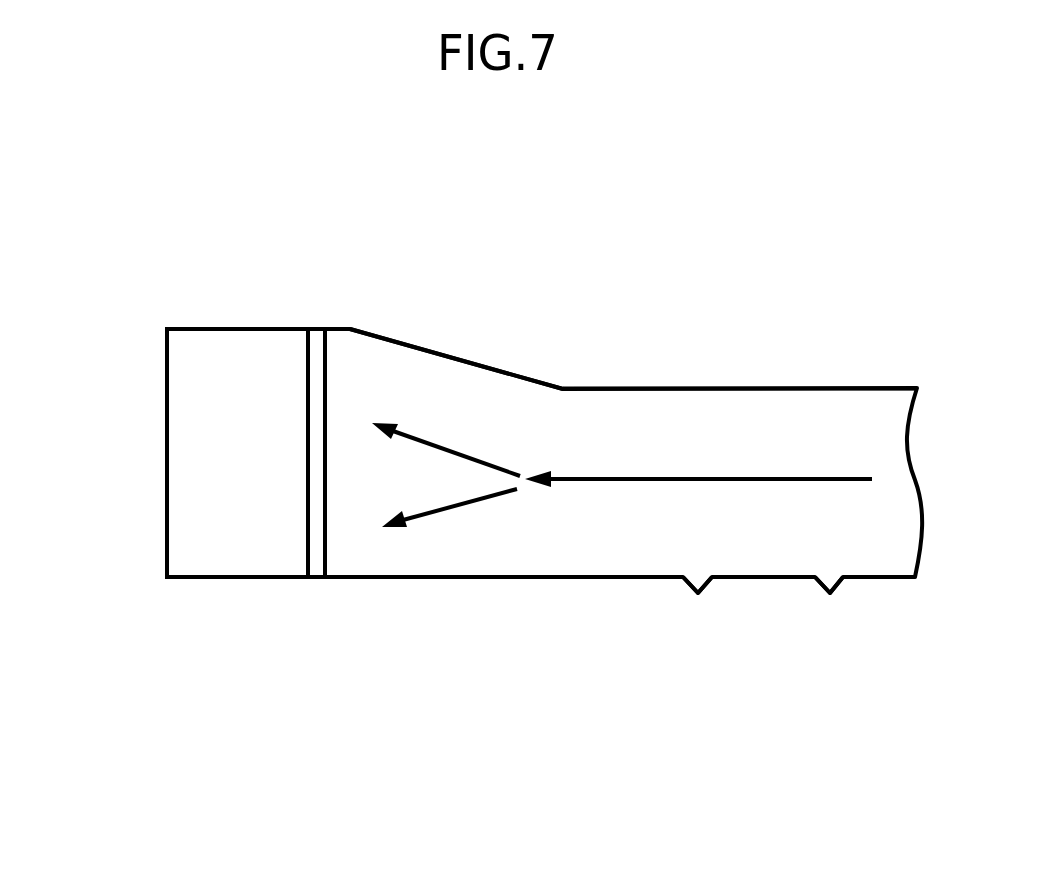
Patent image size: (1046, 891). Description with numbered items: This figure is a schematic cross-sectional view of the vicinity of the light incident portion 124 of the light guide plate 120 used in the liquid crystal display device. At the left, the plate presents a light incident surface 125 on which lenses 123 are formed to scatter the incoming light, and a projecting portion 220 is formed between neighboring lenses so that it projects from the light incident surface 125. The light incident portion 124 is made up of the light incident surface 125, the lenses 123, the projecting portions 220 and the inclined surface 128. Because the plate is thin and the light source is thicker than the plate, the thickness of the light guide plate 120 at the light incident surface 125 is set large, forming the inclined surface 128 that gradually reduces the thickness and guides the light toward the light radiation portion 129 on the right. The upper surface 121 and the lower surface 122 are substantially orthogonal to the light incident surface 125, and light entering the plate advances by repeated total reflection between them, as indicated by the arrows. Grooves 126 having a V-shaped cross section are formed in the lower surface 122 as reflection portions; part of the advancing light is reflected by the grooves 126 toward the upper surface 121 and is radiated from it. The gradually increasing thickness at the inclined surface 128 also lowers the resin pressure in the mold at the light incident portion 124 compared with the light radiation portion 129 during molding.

The light guide plate 120 is at (612, 545).
The upper surface 121 is at (734, 385).
The lower surface 122 is at (742, 578).
The lenses 123 is at (313, 568).
The light incident portion 124 is at (485, 405).
The light incident surface 125 is at (323, 452).
The grooves 126 is at (833, 580).
The inclined surface 128 is at (428, 347).
The light radiation portion 129 is at (806, 405).
The projecting portion 220 is at (222, 352).